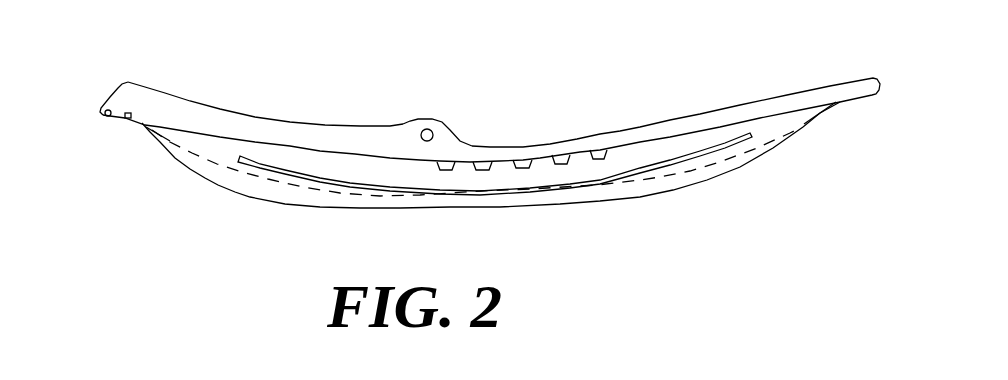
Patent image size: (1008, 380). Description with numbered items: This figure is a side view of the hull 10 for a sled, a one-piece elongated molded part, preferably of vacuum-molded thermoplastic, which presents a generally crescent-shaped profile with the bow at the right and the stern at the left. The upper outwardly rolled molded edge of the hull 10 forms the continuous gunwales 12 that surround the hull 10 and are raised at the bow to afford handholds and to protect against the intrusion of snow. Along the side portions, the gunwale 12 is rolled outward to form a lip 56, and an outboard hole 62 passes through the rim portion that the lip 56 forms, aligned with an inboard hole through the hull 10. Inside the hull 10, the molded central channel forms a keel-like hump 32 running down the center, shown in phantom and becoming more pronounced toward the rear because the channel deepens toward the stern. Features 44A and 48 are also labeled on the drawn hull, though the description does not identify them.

The hull 10 is at (170, 155).
The gunwales 12 is at (680, 118).
The keel-like hump 32 is at (762, 155).
The elongated slot 44A is at (620, 182).
The end tip 48 is at (113, 81).
The lip 56 is at (434, 118).
The outboard hole 62 is at (410, 119).